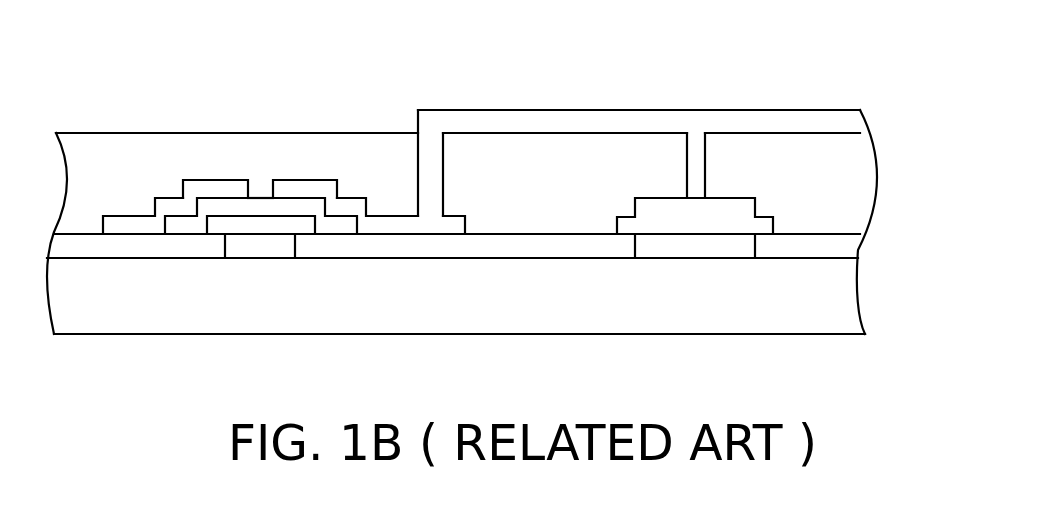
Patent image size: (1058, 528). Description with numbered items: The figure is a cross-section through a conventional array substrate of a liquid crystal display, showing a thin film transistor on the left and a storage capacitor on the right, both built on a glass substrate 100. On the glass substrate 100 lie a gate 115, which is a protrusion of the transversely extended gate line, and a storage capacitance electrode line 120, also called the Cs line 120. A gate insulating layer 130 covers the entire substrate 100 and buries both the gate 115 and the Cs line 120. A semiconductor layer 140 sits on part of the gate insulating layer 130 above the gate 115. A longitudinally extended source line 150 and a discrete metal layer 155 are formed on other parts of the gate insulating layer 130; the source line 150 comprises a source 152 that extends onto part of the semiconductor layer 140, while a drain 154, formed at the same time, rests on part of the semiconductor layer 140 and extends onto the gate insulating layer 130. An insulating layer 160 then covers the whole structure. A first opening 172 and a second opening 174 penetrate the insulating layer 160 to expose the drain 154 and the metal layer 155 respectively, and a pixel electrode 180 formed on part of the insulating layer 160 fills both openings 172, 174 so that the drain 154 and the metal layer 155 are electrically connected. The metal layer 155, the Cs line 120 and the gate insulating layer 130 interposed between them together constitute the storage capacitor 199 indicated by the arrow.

The glass substrate 100 is at (852, 296).
The gate 115 is at (258, 248).
The storage capacitance electrode line 120 is at (668, 248).
The gate insulating layer 130 is at (852, 247).
The semiconductor layer 140 is at (333, 222).
The source line 150 is at (134, 224).
The source 152 is at (217, 187).
The drain 154 is at (304, 187).
The metal layer 155 is at (743, 207).
The insulating layer 160 is at (866, 163).
The first opening 172 is at (417, 152).
The second opening 174 is at (687, 152).
The pixel electrode 180 is at (857, 118).
The storage capacitor 199 is at (725, 272).